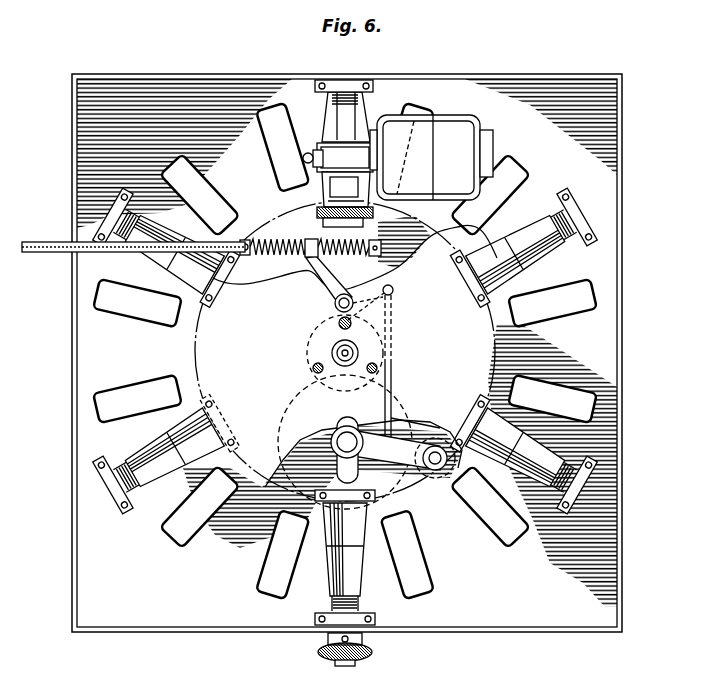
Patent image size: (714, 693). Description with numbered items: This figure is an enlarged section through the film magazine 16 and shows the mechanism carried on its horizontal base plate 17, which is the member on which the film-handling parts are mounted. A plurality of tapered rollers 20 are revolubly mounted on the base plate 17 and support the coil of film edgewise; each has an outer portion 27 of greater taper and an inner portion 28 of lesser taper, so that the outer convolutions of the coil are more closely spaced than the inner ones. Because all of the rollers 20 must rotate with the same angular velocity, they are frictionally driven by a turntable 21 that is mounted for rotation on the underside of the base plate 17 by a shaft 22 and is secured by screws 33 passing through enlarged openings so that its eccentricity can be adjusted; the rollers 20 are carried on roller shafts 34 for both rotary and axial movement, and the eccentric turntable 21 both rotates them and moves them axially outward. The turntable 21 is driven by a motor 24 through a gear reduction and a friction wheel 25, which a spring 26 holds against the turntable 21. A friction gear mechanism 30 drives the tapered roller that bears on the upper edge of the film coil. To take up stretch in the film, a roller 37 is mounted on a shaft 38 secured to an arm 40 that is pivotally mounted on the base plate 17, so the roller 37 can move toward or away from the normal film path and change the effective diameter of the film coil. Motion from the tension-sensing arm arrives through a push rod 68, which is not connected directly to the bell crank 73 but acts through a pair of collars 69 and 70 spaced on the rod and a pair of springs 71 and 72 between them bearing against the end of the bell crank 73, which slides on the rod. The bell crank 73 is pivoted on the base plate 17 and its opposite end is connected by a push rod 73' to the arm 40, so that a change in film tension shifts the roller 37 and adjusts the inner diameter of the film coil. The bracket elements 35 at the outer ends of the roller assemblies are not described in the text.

The magazine 16 is at (272, 66).
The base plate 17 is at (165, 578).
The rollers 20 is at (327, 115).
The turntable 21 is at (215, 352).
The shaft 22 is at (364, 351).
The motor 24 is at (431, 157).
The friction wheel 25 is at (323, 222).
The spring 26 is at (303, 157).
The outer portions 27 is at (546, 252).
The inner portions 28 is at (506, 282).
The friction gear mechanism 30 is at (342, 662).
The screws 33 is at (327, 327).
The roller shafts 34 is at (224, 420).
The outer bracket 35 is at (348, 80).
The roller 37 is at (292, 402).
The shaft 38 is at (352, 462).
The arm 40 is at (420, 470).
The push rod 68 is at (45, 243).
The collar 69 is at (247, 239).
The collar 70 is at (382, 249).
The spring 71 is at (276, 256).
The spring 72 is at (360, 284).
The bell crank 73 is at (359, 365).
The push rod 73' is at (420, 404).